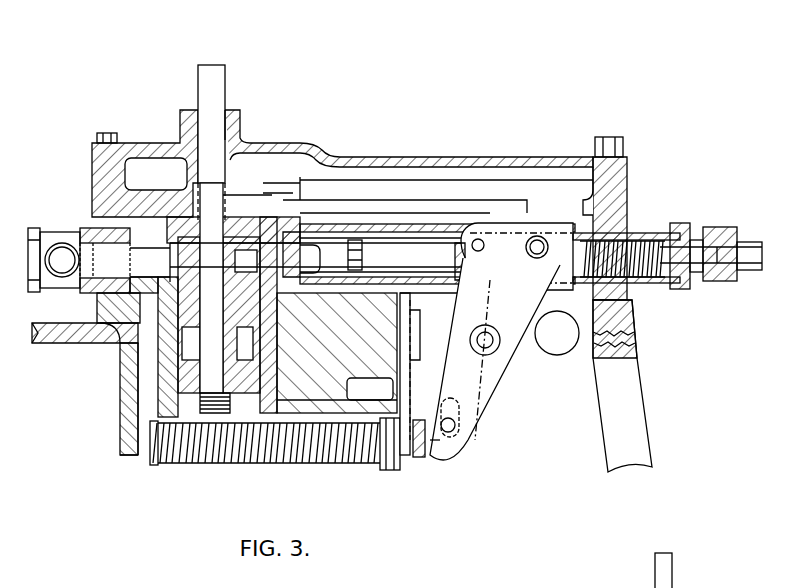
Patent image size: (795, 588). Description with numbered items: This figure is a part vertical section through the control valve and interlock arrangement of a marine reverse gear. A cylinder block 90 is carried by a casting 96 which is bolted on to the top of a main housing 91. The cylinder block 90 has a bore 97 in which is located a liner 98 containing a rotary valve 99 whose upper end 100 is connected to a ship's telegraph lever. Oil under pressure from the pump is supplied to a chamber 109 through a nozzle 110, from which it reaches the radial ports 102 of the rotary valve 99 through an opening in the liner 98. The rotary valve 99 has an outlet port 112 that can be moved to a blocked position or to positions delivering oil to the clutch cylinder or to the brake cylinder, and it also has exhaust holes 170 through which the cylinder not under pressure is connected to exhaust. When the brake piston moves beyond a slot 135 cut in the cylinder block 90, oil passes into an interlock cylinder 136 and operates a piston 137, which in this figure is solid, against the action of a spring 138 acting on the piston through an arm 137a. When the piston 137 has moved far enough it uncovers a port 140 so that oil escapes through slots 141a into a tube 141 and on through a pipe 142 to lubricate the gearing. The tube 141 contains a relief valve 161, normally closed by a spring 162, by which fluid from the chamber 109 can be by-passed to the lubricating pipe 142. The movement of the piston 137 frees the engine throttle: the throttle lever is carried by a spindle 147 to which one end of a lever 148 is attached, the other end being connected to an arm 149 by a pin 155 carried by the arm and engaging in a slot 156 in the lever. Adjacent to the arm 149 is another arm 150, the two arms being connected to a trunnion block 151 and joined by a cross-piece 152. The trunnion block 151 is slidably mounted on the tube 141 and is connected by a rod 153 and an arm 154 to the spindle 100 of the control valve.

The cylinder block 90 is at (365, 410).
The main housing 91 is at (128, 403).
The casting 96 is at (143, 263).
The bore 97 is at (163, 405).
The liner 98 is at (173, 377).
The rotary valve 99 is at (167, 415).
The upper end 100 is at (213, 80).
The radial ports 102 is at (178, 262).
The chamber 109 is at (102, 255).
The nozzle 110 is at (70, 268).
The outlet port 112 is at (187, 343).
The slot 135 is at (283, 280).
The interlock cylinder 136 is at (360, 277).
The piston 137 is at (307, 382).
The arm 137a is at (407, 328).
The spring 138 is at (227, 457).
The port 140 is at (363, 278).
The tube 141 is at (317, 282).
The slots 141a is at (338, 283).
The pipe 142 is at (743, 252).
The spindle 147 is at (485, 247).
The lever 148 is at (455, 298).
The arm 149 is at (478, 387).
The arm 150 is at (605, 293).
The trunnion block 151 is at (573, 225).
The cross-piece 152 is at (490, 348).
The rod 153 is at (483, 206).
The arm 154 is at (247, 193).
The pin 155 is at (457, 427).
The slot 156 is at (447, 447).
The relief valve 161 is at (430, 250).
The spring 162 is at (618, 240).
The exhaust holes 170 is at (250, 455).